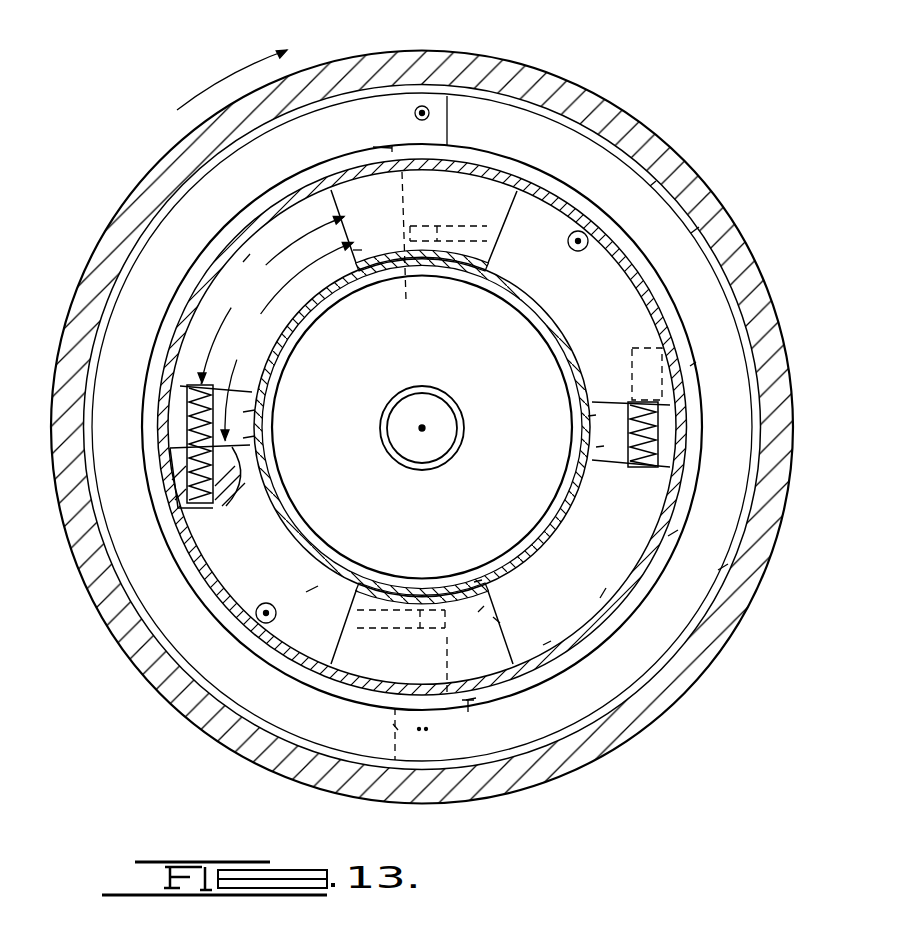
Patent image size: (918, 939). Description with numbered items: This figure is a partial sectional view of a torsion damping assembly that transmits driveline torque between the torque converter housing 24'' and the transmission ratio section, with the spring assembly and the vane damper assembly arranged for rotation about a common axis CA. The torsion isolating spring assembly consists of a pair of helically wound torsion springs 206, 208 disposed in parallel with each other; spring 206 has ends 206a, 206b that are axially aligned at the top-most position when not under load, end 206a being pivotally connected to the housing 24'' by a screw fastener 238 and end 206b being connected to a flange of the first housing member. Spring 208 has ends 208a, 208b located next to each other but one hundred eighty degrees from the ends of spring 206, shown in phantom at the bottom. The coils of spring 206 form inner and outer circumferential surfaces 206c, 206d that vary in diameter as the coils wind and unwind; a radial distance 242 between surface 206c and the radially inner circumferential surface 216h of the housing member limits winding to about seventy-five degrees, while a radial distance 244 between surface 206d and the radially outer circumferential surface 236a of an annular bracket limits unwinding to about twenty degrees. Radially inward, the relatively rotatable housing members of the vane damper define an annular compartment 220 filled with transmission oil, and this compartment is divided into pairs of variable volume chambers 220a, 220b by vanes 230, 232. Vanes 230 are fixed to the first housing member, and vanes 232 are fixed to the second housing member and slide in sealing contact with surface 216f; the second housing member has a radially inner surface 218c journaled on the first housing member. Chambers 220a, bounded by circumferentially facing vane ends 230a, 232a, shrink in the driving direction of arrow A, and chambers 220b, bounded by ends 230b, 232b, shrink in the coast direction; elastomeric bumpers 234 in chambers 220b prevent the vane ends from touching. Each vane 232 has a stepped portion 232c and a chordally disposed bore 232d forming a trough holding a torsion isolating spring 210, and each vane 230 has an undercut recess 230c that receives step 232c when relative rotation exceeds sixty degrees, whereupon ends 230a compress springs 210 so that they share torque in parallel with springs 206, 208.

The torque converter housing 24'' is at (422, 405).
The helically wound torsion spring 206 is at (290, 134).
The spring end 206a is at (448, 128).
The spring end 206b is at (373, 147).
The inner circumferential surface 206c is at (693, 364).
The outer circumferential surface 206d is at (653, 183).
The radially outer circumferential surface 236a is at (695, 230).
The screw fastener 238 is at (421, 105).
The annular compartment 220 is at (267, 240).
The variable volume chamber 220a is at (243, 262).
The variable volume chamber 220b is at (527, 193).
The vane 232 is at (606, 310).
The circumferentially facing vane end 232a is at (243, 438).
The circumferentially facing vane end 232b is at (312, 588).
The stepped portion 232c is at (243, 412).
The chordally disposed bore 232d is at (237, 500).
The torsion isolating spring 210 is at (187, 395).
The vane 230 is at (458, 205).
The circumferentially facing vane end 230a is at (357, 250).
The circumferentially facing vane end 230b is at (368, 574).
The undercut recess 230c is at (430, 258).
The elastomeric bumper 234 is at (566, 242).
The radially inner circumferential surface 216h is at (668, 318).
The housing member surface 216f is at (478, 580).
The radial distance 242 is at (673, 533).
The radial distance 244 is at (723, 567).
The helically wound torsion spring 208 is at (262, 668).
The spring end 208a is at (393, 727).
The spring end 208b is at (474, 700).
The radially inner surface 218c is at (547, 643).
The common axis CA is at (424, 426).
The driving mode direction arrow A is at (232, 80).